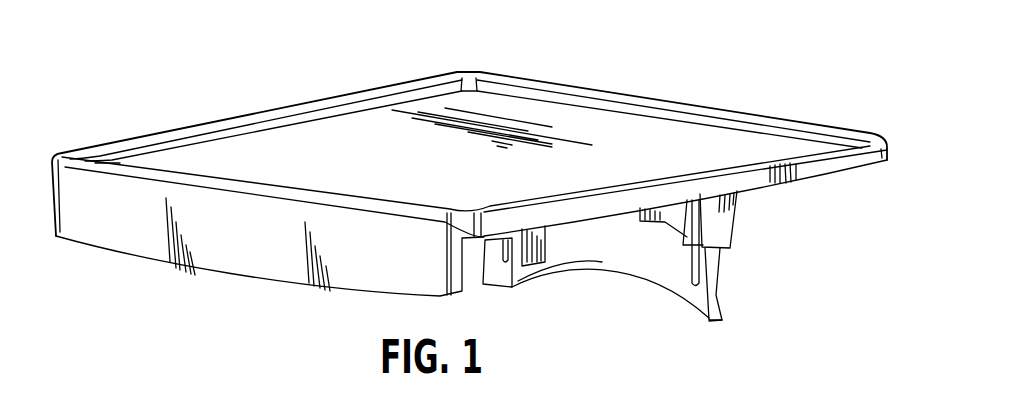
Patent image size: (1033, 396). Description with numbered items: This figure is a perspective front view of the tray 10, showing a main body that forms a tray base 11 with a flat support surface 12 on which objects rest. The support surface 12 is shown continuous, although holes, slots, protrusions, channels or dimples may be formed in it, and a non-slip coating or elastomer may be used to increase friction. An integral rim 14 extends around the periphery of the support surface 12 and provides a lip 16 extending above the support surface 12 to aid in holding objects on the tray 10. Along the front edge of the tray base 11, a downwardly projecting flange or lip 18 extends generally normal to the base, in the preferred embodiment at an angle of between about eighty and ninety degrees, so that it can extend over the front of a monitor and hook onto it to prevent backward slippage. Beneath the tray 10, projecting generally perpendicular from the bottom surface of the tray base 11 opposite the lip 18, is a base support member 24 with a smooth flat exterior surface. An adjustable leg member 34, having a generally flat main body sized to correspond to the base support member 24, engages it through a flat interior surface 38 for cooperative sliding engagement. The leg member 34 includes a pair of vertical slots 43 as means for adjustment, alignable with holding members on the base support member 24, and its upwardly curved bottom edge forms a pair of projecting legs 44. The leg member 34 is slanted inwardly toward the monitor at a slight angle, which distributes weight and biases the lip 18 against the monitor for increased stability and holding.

The tray 10 is at (694, 78).
The tray base 11 is at (795, 184).
The support surface 12 is at (441, 164).
The rim 14 is at (263, 112).
The lip 16 is at (527, 96).
The lip 18 is at (256, 259).
The base support member 24 is at (730, 229).
The adjustable leg member 34 is at (717, 284).
The flat interior surface 38 is at (634, 254).
The vertical slots 43 is at (697, 266).
The projecting legs 44 is at (497, 284).